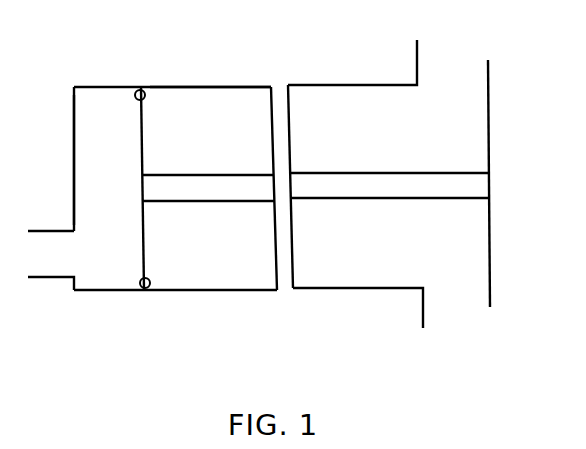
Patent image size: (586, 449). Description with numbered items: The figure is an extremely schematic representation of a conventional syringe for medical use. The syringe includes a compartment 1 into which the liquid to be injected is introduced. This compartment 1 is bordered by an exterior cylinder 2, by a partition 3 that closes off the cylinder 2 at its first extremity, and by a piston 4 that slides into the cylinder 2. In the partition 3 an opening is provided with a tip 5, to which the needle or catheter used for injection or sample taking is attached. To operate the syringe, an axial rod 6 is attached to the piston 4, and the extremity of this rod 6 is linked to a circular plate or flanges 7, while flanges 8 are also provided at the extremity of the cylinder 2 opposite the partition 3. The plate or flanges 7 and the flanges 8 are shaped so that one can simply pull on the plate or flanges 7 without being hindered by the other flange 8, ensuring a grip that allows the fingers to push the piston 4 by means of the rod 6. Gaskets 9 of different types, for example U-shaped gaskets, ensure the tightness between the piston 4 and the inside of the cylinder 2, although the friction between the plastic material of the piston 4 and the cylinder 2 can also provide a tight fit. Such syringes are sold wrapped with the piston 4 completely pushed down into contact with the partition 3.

The compartment 1 is at (102, 102).
The exterior cylinder 2 is at (218, 85).
The partition 3 is at (73, 127).
The piston 4 is at (144, 148).
The tip 5 is at (40, 228).
The axial rod 6 is at (376, 172).
The circular plate or flanges 7 is at (489, 122).
The flanges 8 is at (418, 58).
The gaskets 9 is at (144, 91).